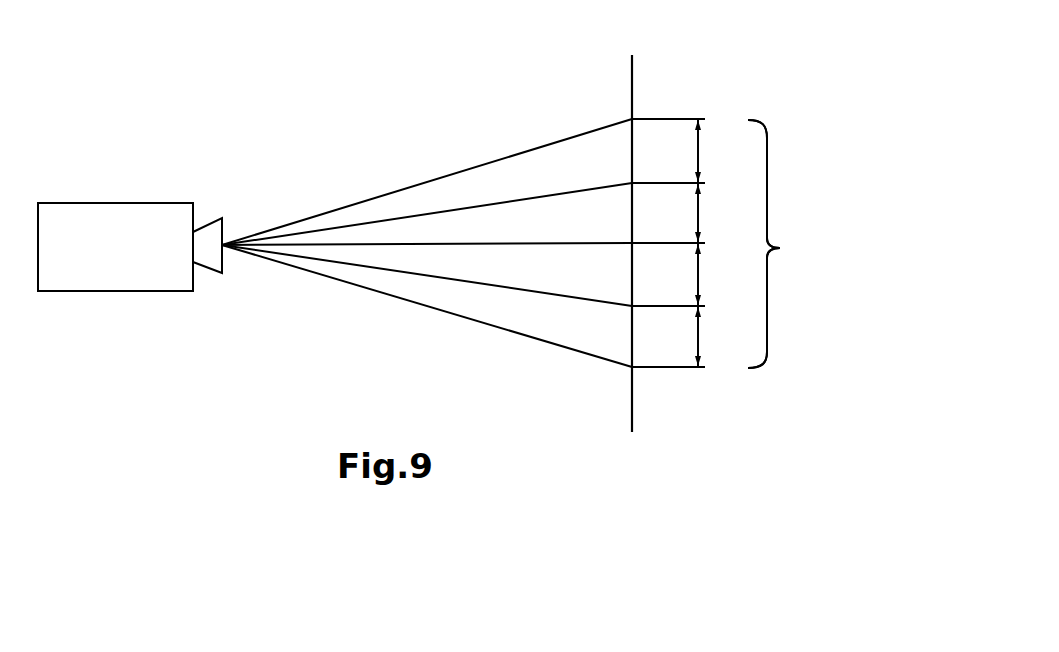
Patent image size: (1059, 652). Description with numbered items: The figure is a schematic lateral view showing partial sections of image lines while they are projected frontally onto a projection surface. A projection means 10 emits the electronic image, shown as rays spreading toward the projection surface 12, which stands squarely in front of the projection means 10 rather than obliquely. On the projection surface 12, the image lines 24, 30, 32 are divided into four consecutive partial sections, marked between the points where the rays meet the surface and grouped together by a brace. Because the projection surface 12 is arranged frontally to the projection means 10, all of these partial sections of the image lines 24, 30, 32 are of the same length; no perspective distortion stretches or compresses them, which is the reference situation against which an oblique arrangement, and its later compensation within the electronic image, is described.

The projection means 10 is at (108, 232).
The projection surface 12 is at (632, 80).
The image line 24 is at (776, 243).
The image line 30 is at (809, 243).
The image line 32 is at (834, 244).